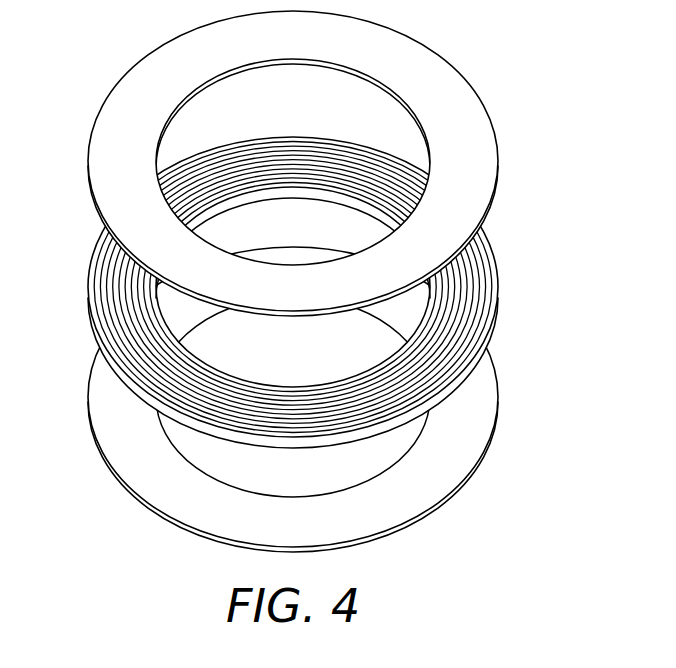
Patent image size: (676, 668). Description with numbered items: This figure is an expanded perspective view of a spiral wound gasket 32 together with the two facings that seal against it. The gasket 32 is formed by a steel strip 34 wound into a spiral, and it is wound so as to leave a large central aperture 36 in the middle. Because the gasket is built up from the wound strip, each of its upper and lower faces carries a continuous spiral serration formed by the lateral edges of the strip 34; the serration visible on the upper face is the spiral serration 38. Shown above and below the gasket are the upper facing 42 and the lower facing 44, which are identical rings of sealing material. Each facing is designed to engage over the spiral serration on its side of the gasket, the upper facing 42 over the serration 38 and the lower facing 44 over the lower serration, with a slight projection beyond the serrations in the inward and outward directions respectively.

The spiral wound gasket 32 is at (297, 292).
The steel strip 34 is at (110, 306).
The central aperture 36 is at (307, 365).
The spiral serration 38 is at (120, 279).
The upper facing 42 is at (432, 66).
The lower facing 44 is at (485, 421).